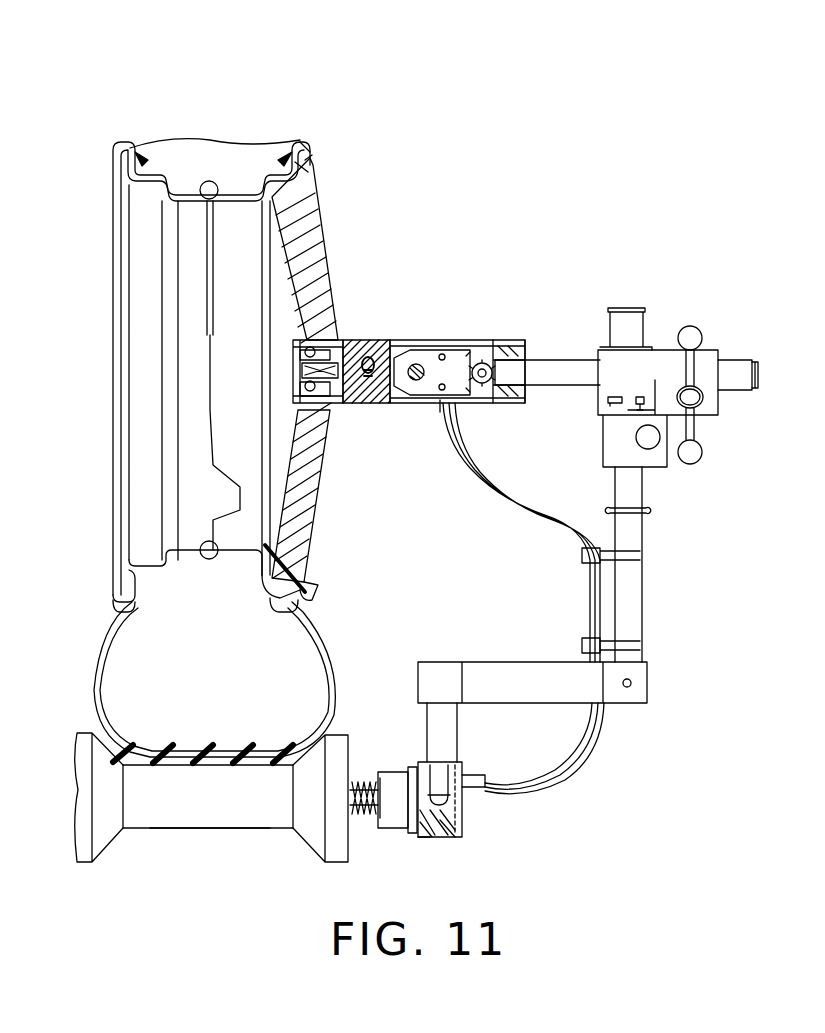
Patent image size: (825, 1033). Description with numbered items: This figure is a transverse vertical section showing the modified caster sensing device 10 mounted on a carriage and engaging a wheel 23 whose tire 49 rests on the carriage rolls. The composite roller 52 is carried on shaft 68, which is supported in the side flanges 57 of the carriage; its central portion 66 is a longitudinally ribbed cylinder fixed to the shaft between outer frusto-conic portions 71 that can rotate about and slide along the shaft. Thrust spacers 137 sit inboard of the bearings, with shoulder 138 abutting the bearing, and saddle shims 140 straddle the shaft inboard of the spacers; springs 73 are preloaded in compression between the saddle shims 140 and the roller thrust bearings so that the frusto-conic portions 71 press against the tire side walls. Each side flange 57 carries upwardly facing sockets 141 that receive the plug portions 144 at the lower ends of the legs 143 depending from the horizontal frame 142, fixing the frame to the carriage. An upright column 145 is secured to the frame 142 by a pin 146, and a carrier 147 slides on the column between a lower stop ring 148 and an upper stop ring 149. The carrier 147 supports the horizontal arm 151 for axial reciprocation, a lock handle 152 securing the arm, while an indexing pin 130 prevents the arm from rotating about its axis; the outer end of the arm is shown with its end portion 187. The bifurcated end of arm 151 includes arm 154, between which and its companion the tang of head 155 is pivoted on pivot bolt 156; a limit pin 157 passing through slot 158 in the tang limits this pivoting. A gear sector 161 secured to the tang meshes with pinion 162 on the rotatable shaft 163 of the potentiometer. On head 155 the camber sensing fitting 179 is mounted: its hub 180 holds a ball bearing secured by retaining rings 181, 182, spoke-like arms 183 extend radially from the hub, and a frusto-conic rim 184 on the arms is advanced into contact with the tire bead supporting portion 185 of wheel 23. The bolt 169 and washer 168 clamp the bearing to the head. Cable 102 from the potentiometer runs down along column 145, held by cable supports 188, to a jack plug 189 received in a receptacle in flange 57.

The modified device for sensing caster 10 is at (822, 456).
The wheel 23 is at (248, 190).
The tire 49 is at (318, 622).
The composite roller 52 is at (234, 848).
The side flange 57 is at (450, 835).
The central portion 66 is at (222, 810).
The shaft 68 is at (385, 790).
The frusto-conic portions 71 is at (108, 810).
The springs 73 is at (353, 785).
The cable 102 is at (510, 505).
The indexing pin 130 is at (608, 405).
The thrust spacers 137 is at (414, 835).
The shoulder 138 is at (424, 838).
The saddle shims 140 is at (390, 830).
The sockets 141 is at (460, 810).
The frame 142 is at (536, 697).
The legs 143 is at (438, 726).
The plug portions 144 is at (445, 770).
The column 145 is at (630, 590).
The pin 146 is at (632, 683).
The carrier 147 is at (697, 360).
The lower stop ring 148 is at (644, 510).
The upper stop ring 149 is at (644, 318).
The horizontal arm 151 is at (730, 380).
The handle 152 is at (700, 455).
The arm 154 is at (480, 403).
The head 155 is at (350, 340).
The pivot bolt 156 is at (420, 370).
The limit pin 157 is at (375, 385).
The slot 158 is at (410, 350).
The gear sector 161 is at (470, 356).
The pinion 162 is at (490, 360).
The rotatable shaft 163 is at (508, 372).
The washer 168 is at (300, 357).
The bolt 169 is at (300, 378).
The camber sensing fitting 179 is at (327, 223).
The hub 180 is at (340, 340).
The bearing retaining ring 181 is at (300, 392).
The bearing retaining ring 182 is at (300, 342).
The spoke-like arms 183 is at (300, 240).
The frusto-conic rim 184 is at (300, 158).
The tire bead supporting portion 185 is at (305, 176).
The cap 187 is at (750, 362).
The cable supports 188 is at (582, 645).
The jack plug 189 is at (472, 772).